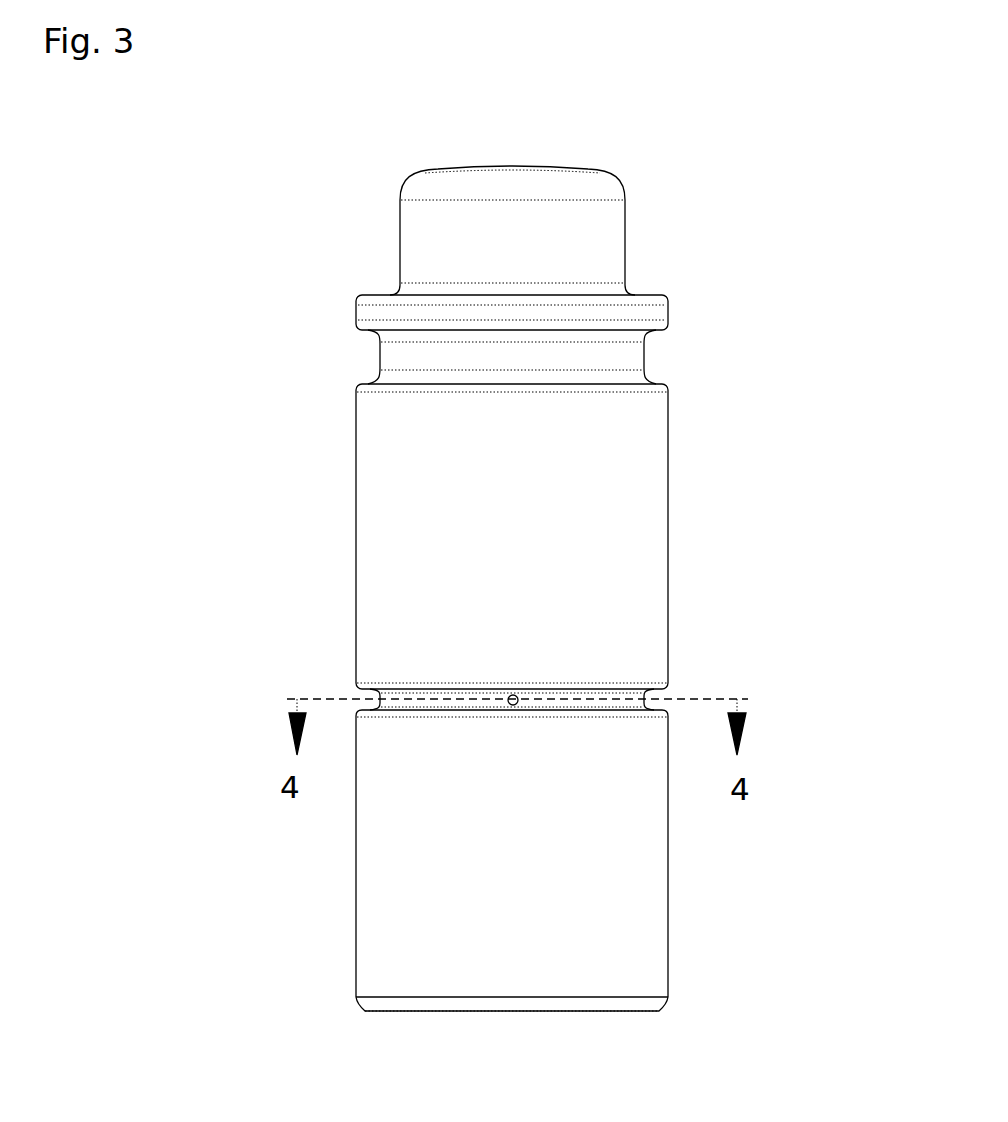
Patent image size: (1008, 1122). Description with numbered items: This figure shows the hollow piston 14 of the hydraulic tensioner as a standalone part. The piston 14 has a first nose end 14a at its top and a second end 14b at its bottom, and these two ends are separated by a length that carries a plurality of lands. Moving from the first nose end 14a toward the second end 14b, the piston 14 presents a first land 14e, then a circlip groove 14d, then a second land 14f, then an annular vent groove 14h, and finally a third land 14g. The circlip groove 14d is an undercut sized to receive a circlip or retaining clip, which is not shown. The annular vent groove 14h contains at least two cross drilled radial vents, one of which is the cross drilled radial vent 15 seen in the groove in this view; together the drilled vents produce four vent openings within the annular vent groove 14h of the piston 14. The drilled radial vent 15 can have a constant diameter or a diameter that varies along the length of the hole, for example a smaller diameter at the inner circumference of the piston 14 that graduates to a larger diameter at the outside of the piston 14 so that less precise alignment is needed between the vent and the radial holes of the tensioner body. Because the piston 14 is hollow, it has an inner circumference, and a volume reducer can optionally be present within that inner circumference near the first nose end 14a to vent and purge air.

The hollow piston 14 is at (539, 558).
The first nose end 14a is at (512, 163).
The second end 14b is at (602, 1012).
The circlip groove 14d is at (643, 352).
The first land 14e is at (662, 298).
The second land 14f is at (660, 472).
The third land 14g is at (357, 853).
The annular vent groove 14h is at (647, 698).
The cross drilled radial vent 15 is at (509, 697).